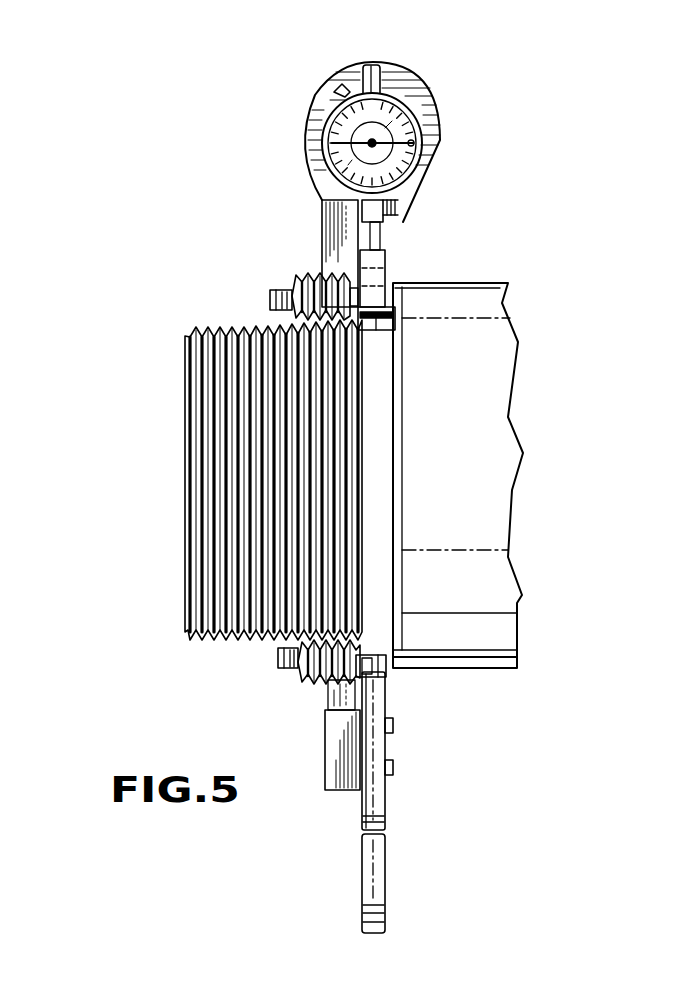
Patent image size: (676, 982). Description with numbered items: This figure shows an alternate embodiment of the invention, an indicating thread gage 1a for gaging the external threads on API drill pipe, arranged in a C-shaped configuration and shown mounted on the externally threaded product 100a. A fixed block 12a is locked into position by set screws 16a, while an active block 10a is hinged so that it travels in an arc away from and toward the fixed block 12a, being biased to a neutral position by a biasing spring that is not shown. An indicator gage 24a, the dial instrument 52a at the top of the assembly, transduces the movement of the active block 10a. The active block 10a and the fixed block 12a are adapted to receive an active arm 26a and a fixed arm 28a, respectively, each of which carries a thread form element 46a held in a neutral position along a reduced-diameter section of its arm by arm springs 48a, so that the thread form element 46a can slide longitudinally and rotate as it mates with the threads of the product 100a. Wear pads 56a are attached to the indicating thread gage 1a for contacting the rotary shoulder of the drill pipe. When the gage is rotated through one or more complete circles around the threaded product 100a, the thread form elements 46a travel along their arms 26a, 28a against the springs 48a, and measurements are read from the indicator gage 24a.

The indicating thread gage 1a is at (278, 162).
The dial indicator 52a is at (376, 137).
The indicator gage 24a is at (418, 103).
The adjusting screw 46a is at (305, 280).
The screw tip pin 48a is at (283, 290).
The active arm 26a is at (270, 300).
The fixed arm 28a is at (278, 656).
The active block 10a is at (378, 285).
The wear pads 56a is at (395, 310).
The threaded workpiece 100a is at (503, 352).
The fixed block 12a is at (385, 685).
The set screws 16a is at (393, 725).